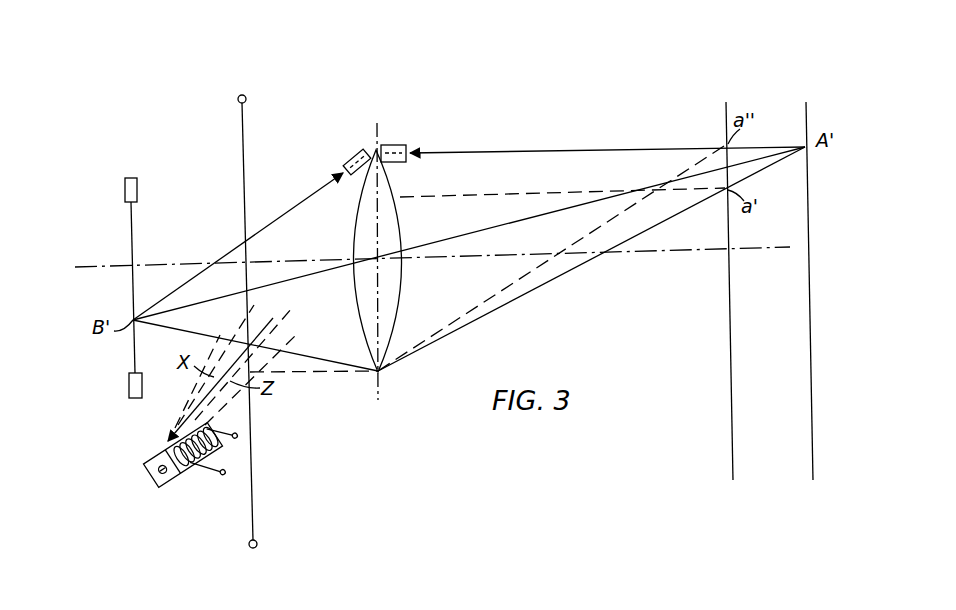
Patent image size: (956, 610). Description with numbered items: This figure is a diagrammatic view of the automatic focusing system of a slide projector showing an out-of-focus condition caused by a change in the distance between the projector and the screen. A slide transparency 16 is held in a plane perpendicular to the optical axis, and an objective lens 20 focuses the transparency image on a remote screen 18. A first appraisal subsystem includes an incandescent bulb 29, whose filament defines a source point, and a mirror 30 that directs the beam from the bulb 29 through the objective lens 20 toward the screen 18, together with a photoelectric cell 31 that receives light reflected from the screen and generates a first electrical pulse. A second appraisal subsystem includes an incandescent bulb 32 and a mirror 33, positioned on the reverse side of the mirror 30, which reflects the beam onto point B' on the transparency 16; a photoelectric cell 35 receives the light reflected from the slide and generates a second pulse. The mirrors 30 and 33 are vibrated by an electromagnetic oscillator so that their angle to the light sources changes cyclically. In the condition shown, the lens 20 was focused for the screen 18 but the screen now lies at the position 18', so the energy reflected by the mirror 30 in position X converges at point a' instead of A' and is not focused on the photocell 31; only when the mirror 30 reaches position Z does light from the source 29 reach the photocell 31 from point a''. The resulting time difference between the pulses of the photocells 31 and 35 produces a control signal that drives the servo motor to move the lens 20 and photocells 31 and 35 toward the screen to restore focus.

The slide transparency 16 is at (131, 242).
The screen 18 is at (792, 271).
The screen position 18' is at (713, 271).
The objective lens 20 is at (385, 178).
The incandescent bulb 29 is at (257, 544).
The mirror 30 is at (274, 320).
The photoelectric cell 31 is at (393, 145).
The incandescent bulb 32 is at (246, 97).
The mirror 33 is at (273, 318).
The photoelectric cell 35 is at (355, 152).